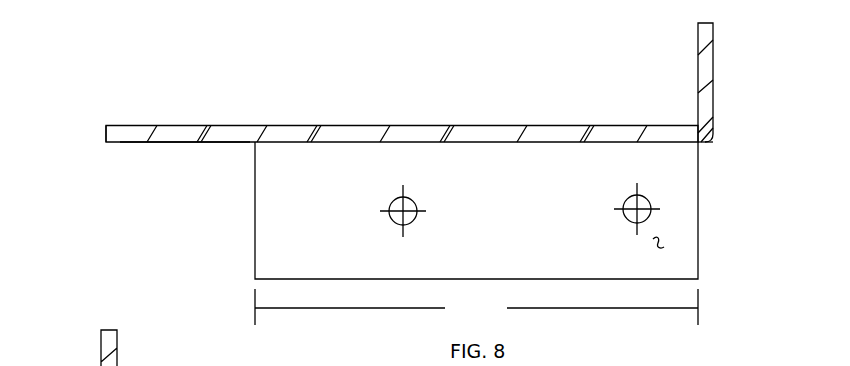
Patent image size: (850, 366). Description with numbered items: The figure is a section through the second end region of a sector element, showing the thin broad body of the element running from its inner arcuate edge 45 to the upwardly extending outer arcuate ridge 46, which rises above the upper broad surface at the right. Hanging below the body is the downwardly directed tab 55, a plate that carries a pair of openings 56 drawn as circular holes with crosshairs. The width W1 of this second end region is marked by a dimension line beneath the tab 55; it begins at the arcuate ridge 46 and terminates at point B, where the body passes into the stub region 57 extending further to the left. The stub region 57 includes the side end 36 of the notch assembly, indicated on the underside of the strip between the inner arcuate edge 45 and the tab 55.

The stub region 57 is at (178, 106).
The point B is at (261, 125).
The outer arcuate ridge 46 is at (714, 85).
The downwardly directed tab 55 is at (664, 240).
The openings 56 is at (623, 200).
The inner arcuate edge 45 is at (104, 134).
The side end 36 is at (176, 144).
The width W1 is at (476, 307).